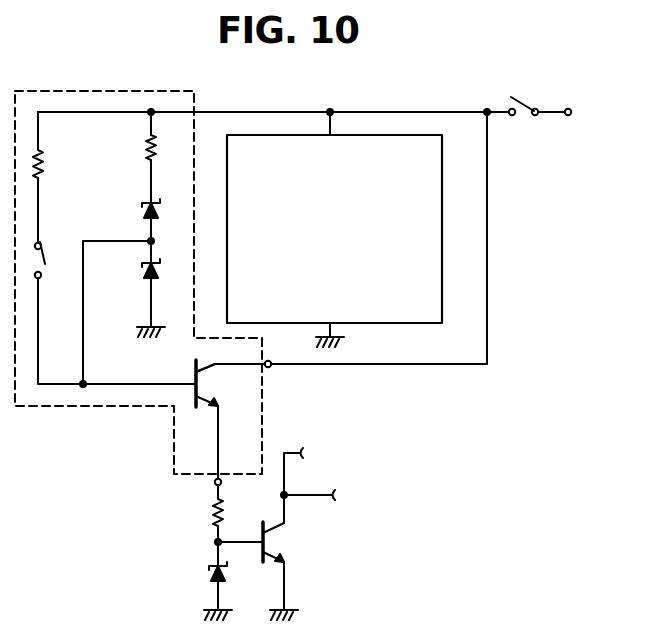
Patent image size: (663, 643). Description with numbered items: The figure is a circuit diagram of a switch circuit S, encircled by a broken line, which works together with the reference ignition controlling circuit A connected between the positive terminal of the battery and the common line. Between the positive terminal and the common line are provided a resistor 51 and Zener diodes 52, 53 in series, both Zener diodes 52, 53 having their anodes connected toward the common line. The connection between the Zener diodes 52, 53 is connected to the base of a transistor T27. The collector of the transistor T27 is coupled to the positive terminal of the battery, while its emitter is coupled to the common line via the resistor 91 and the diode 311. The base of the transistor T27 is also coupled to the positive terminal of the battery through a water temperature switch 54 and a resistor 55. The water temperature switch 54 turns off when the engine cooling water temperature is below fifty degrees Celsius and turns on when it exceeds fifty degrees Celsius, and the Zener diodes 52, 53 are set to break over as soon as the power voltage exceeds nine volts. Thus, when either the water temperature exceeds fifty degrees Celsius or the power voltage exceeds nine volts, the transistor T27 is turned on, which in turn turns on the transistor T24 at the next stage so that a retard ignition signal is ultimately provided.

The switch circuit S is at (187, 432).
The reference ignition controlling circuit A is at (319, 258).
The resistor 51 is at (147, 147).
The Zener diode 52 is at (143, 211).
The Zener diode 53 is at (146, 278).
The water temperature switch 54 is at (45, 264).
The resistor 55 is at (40, 167).
The transistor T27 is at (203, 388).
The resistor 91 is at (215, 511).
The diode 311 is at (209, 577).
The transistor T24 is at (277, 541).